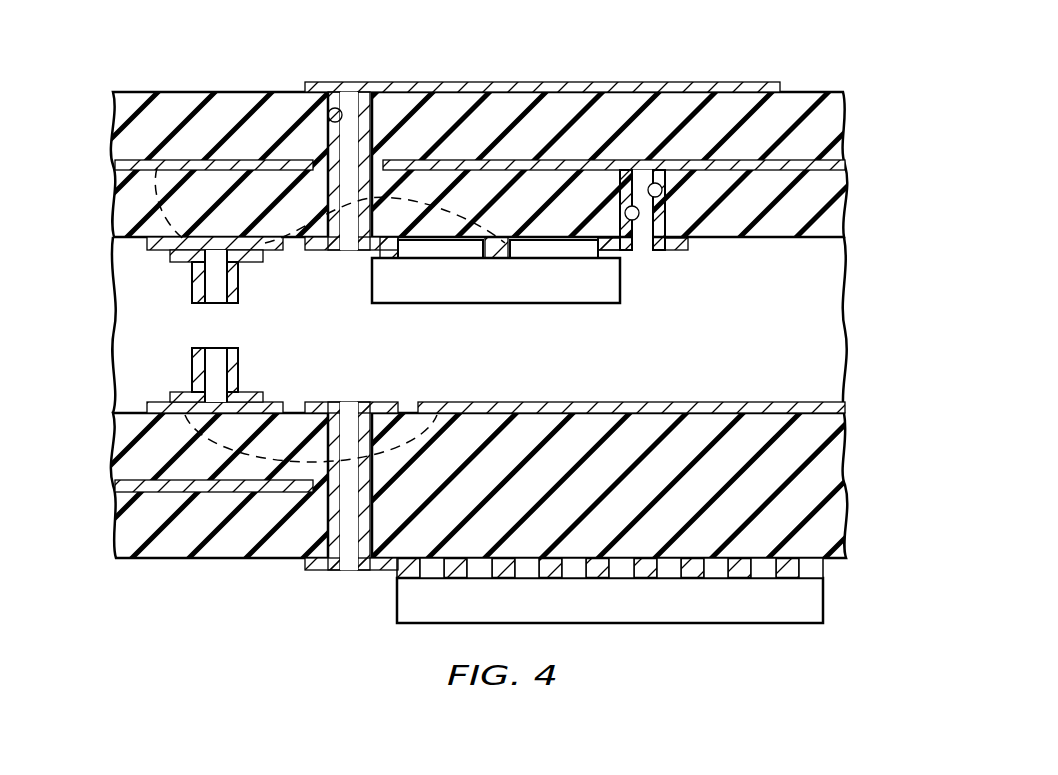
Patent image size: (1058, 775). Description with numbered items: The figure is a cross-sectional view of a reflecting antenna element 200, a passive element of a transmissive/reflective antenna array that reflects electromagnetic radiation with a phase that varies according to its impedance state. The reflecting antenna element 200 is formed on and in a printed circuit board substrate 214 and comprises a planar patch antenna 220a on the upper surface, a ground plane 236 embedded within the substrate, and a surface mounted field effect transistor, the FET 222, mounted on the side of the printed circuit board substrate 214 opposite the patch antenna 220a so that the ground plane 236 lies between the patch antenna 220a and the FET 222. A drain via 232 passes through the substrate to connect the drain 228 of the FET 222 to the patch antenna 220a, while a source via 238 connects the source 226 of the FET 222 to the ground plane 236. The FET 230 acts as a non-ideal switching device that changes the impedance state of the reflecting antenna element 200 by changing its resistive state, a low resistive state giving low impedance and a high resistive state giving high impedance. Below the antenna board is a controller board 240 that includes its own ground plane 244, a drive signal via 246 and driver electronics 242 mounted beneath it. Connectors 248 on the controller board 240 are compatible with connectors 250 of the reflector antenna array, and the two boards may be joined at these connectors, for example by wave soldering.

The reflecting antenna element 200 is at (884, 462).
The printed circuit board substrate 214 is at (115, 130).
The patch antenna 220a is at (318, 82).
The surface mounted field effect transistor (FET) 222 is at (372, 288).
The source 226 is at (622, 252).
The drain 228 is at (370, 250).
The FET 230 is at (520, 258).
The drain via 232 is at (352, 90).
The ground plane 236 is at (115, 165).
The source via 238 is at (625, 213).
The controller board 240 is at (716, 389).
The driver electronics 242 is at (825, 600).
The ground plane 244 is at (845, 405).
The drive signal via 246 is at (346, 404).
The connectors 248 is at (192, 367).
The connectors 250 is at (192, 280).